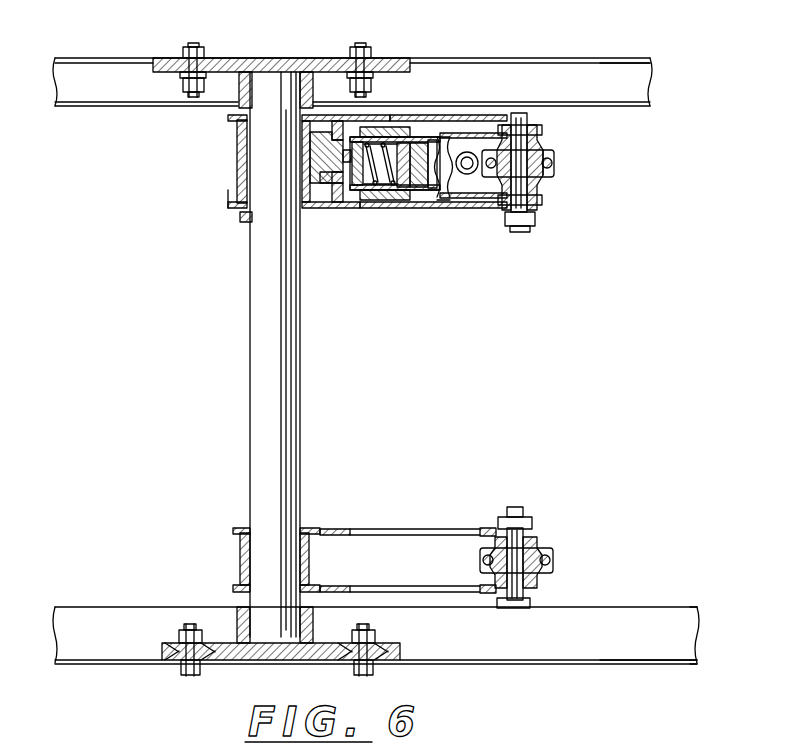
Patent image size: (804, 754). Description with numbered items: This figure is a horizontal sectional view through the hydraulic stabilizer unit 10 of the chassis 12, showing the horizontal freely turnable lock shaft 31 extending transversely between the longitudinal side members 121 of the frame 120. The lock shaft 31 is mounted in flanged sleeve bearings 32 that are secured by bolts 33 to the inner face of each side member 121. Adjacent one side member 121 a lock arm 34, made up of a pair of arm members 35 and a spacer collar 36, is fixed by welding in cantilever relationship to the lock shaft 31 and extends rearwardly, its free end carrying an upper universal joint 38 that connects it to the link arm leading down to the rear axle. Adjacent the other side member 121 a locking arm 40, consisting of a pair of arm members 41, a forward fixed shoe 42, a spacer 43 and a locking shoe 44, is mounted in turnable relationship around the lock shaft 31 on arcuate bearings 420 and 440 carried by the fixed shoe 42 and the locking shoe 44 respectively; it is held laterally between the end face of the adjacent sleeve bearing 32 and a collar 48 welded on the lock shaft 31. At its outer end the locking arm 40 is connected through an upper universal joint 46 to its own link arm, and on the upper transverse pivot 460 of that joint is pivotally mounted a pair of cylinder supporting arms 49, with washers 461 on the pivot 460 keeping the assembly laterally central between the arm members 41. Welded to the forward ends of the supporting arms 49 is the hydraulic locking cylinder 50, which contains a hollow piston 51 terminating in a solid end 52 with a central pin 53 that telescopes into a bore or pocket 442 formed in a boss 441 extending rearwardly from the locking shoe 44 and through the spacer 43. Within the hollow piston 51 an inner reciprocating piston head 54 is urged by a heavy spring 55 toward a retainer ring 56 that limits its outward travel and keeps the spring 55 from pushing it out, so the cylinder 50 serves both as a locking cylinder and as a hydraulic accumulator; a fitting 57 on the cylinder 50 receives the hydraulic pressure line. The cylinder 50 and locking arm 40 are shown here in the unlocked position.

The hydraulic stabilizer unit 10 is at (272, 354).
The chassis 12 is at (700, 640).
The lock shaft 31 is at (283, 384).
The flanged sleeve bearings 32 is at (241, 95).
The bolts 33 is at (192, 48).
The lock arm 34 is at (334, 530).
The arm members 35 is at (386, 535).
The spacer collar 36 is at (235, 541).
The upper universal joint 38 is at (552, 562).
The locking arm 40 is at (468, 120).
The arm members 41 is at (479, 135).
The forward fixed shoe 42 is at (235, 160).
The spacer 43 is at (335, 202).
The locking shoe 44 is at (318, 160).
The upper universal joint 46 is at (558, 164).
The collar 48 is at (242, 220).
The cylinder supporting arms 49 is at (490, 134).
The hydraulic locking cylinder 50 is at (440, 200).
The hollow piston 51 is at (410, 188).
The solid end 52 is at (358, 148).
The central pin 53 is at (342, 164).
The inner reciprocating piston head 54 is at (422, 142).
The heavy spring 55 is at (386, 186).
The retainer ring 56 is at (440, 138).
The fitting 57 is at (466, 168).
The frame 120 is at (102, 58).
The longitudinal side members 121 is at (619, 63).
The arcuate bearing 420 is at (233, 188).
The arcuate bearing 440 is at (306, 202).
The boss 441 is at (332, 72).
The bore or pocket 442 is at (322, 175).
The upper transverse pivot 460 is at (528, 178).
The washers 461 is at (542, 133).